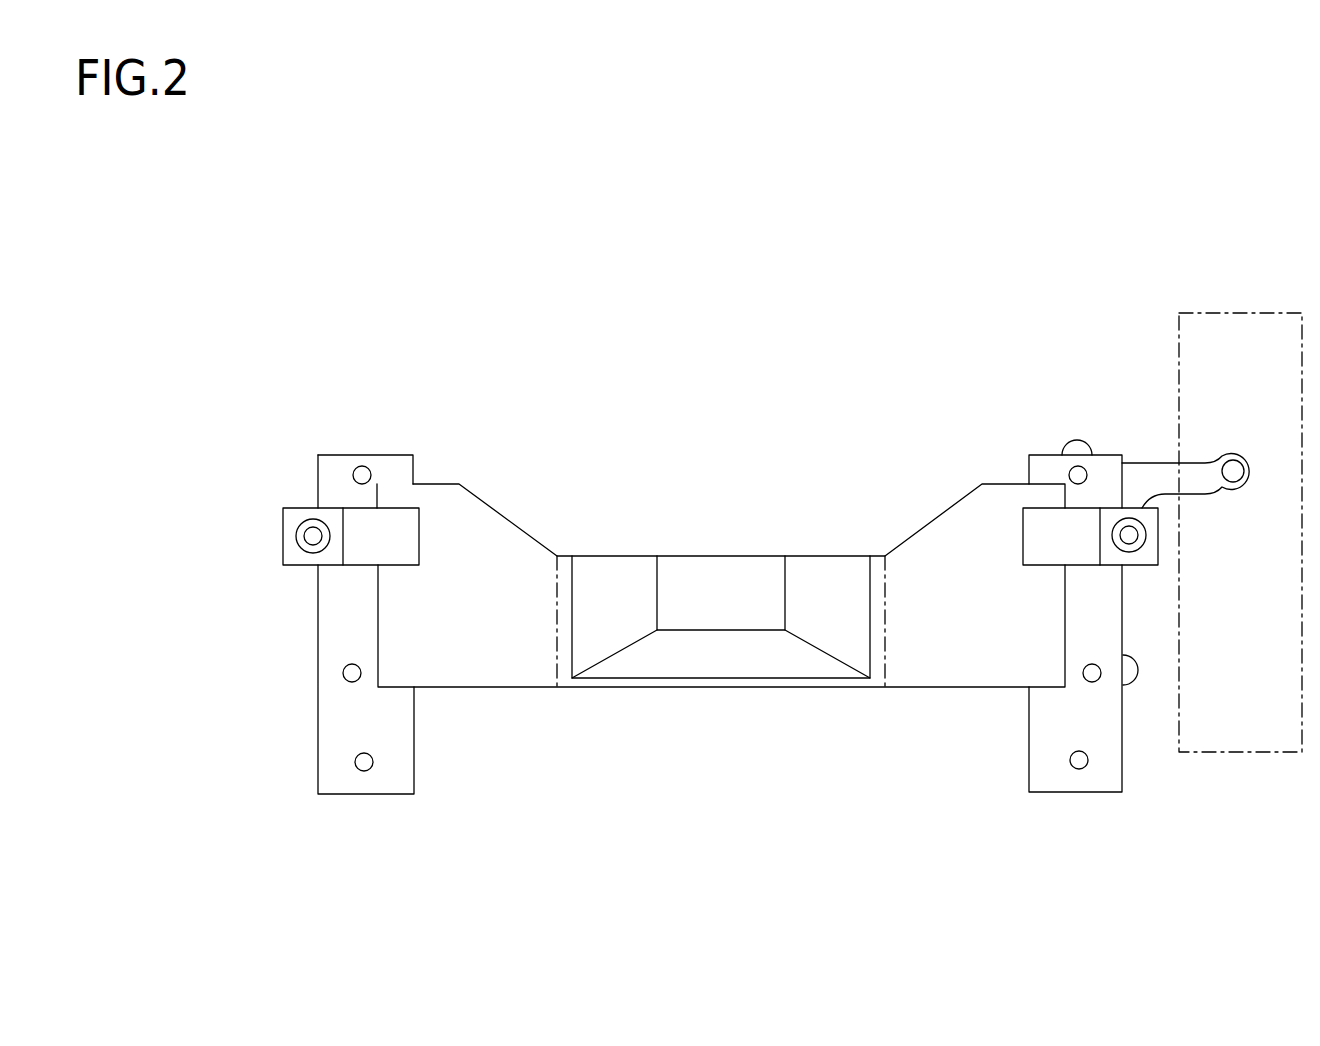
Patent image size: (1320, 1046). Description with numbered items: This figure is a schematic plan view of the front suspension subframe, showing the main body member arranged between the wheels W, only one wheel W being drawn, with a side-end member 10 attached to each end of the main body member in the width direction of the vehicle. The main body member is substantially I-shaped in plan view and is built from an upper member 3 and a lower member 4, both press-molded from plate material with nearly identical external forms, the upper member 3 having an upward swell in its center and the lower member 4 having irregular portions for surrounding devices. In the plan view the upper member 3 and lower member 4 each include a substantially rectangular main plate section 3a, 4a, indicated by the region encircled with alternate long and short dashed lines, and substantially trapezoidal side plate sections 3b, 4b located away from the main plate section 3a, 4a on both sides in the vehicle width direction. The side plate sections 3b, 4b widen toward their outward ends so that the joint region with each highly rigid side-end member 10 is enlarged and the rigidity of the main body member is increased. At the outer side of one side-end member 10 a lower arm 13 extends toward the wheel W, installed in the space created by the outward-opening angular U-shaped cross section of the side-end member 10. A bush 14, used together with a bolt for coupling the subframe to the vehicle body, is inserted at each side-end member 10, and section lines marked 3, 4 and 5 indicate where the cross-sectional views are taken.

The main plate section 3a is at (721, 656).
The main plate section 4a is at (637, 667).
The side plate section 3b is at (721, 620).
The side plate section 4b is at (512, 667).
The side-end member 10 is at (385, 462).
The lower arm 13 is at (1148, 470).
The bush 14 is at (311, 518).
The wheel W is at (1247, 315).
The upper member 3 is at (722, 540).
The lower member 4 is at (250, 627).
The section line 5- 5 is at (250, 535).